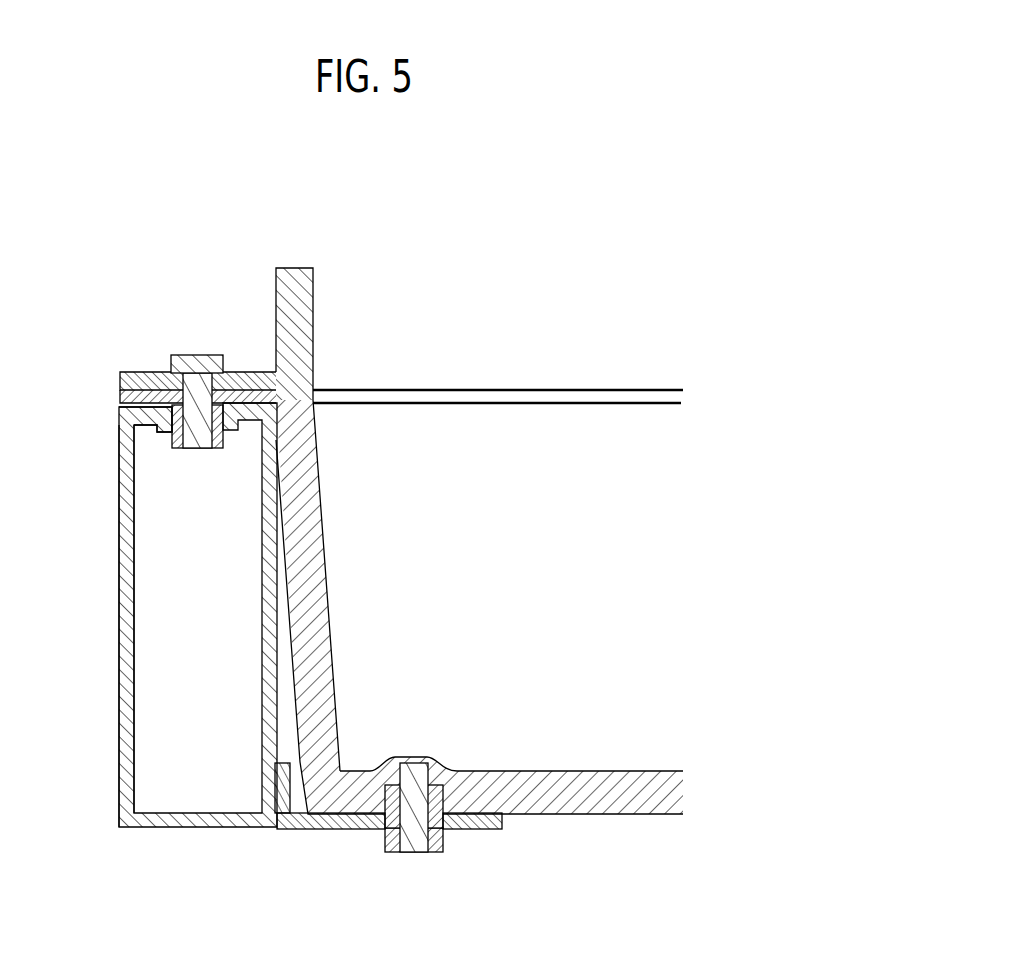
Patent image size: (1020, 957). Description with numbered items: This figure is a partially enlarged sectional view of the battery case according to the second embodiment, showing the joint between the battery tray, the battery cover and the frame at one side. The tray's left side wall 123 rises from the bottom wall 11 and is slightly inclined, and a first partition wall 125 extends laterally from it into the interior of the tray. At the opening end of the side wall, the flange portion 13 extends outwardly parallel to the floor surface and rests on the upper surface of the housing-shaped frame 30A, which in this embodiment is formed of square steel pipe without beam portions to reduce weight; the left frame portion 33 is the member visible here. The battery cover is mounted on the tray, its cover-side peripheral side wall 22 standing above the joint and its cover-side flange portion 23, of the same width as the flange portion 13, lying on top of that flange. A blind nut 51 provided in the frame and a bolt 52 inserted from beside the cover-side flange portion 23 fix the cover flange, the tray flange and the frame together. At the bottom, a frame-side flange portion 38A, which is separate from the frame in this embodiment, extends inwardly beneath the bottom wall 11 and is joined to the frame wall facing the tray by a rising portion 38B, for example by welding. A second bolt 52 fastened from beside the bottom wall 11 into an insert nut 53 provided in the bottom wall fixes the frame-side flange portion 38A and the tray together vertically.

The bottom wall 11 is at (622, 780).
The flange portion 13 is at (122, 396).
The cover-side peripheral side wall 22 is at (297, 320).
The cover-side flange portion 23 is at (142, 375).
The housing-shaped frame 30A is at (128, 687).
The left frame portion 33 is at (127, 588).
The frame-side flange portion 38A is at (345, 830).
The rising portion 38B is at (283, 830).
The blind nut 51 is at (165, 438).
The bolt 52 is at (197, 450).
The insert nut 53 is at (467, 830).
The left side wall 123 is at (308, 508).
The first partition wall 125 is at (572, 428).